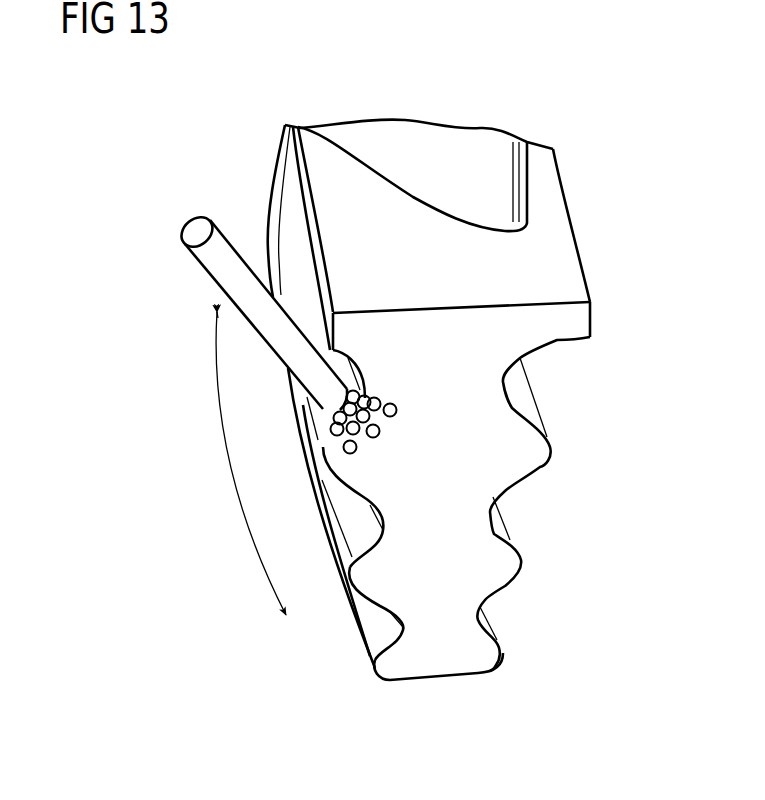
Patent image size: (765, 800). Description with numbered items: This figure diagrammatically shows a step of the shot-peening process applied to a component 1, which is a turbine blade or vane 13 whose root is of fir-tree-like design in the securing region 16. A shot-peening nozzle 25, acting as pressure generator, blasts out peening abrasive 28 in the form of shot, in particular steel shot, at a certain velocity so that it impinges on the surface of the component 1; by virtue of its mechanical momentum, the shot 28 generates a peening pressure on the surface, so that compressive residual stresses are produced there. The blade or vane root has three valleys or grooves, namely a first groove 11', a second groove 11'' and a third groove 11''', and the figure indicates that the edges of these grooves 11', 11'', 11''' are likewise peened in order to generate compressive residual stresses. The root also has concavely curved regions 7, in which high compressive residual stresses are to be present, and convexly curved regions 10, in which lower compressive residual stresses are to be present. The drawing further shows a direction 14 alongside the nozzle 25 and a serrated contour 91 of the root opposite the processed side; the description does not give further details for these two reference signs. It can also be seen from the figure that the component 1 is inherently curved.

The component 1 is at (360, 95).
The shot-peening nozzle 25 is at (217, 272).
The securing region 16 is at (557, 327).
The first groove 11' is at (395, 366).
The peening abrasive 28 is at (380, 433).
The direction of movement 14 is at (232, 472).
The second groove 11'' is at (393, 507).
The concavely curved region 7 is at (383, 530).
The serrated edge 91 is at (505, 567).
The convexly curved region 10 is at (347, 603).
The third groove 11''' is at (426, 650).
The turbine blade or vane 13 is at (538, 690).